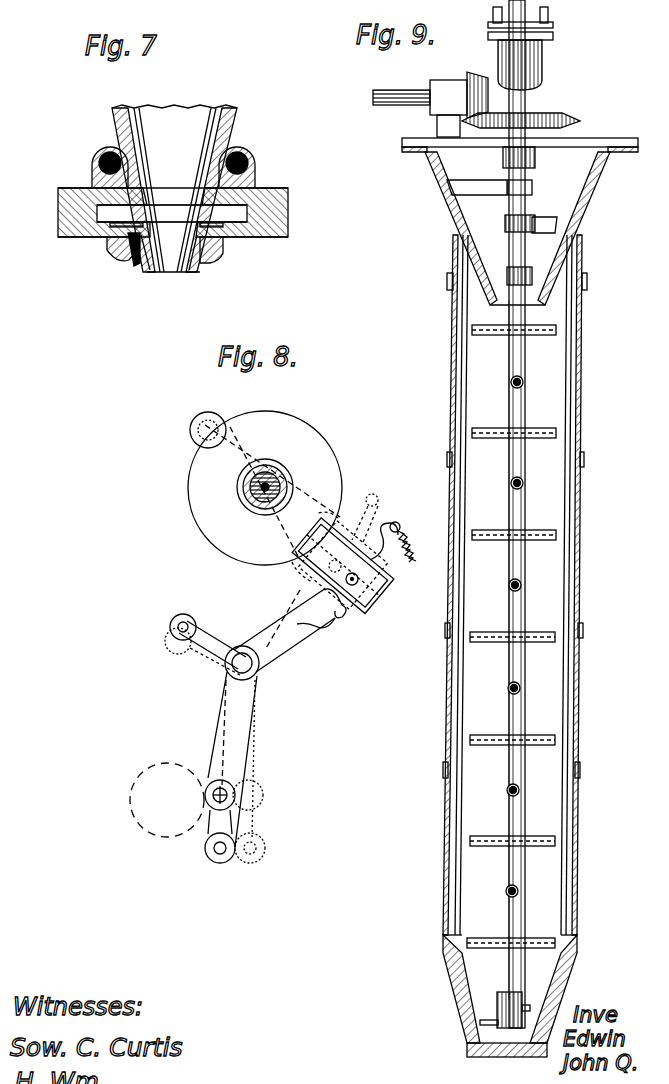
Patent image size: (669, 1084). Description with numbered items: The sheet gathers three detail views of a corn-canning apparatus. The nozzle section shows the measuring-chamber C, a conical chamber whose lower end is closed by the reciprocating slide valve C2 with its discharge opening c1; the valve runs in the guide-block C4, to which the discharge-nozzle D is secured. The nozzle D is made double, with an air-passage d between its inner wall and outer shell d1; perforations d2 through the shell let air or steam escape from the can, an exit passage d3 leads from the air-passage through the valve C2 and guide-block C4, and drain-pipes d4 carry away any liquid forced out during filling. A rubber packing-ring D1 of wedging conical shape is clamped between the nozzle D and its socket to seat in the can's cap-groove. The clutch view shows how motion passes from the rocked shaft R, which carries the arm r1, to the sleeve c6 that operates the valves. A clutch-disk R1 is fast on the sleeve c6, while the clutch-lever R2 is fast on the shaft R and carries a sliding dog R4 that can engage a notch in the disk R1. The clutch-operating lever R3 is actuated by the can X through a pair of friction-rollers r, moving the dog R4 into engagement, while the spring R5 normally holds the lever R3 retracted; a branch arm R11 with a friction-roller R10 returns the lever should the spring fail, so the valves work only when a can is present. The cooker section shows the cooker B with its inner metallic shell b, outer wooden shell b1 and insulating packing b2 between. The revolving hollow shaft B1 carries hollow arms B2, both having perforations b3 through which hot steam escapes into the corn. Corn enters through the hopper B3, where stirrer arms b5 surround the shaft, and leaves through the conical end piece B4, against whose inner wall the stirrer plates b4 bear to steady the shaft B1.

In FIG. 7, the measuring-chamber C is at (174, 188).
In FIG. 7, the lower valve C2 is at (108, 228).
In FIG. 7, the guide-block C4 is at (276, 190).
In FIG. 7, the valve opening c1 is at (174, 212).
In FIG. 8, the sleeve c6 is at (248, 497).
In FIG. 7, the discharge-nozzle D is at (174, 233).
In FIG. 7, the packing-ring D1 is at (221, 265).
In FIG. 7, the air-passage d is at (152, 268).
In FIG. 7, the outer shell d1 is at (143, 268).
In FIG. 7, the perforations d2 is at (127, 262).
In FIG. 7, the exit passage d3 is at (66, 207).
In FIG. 7, the drain-pipes d4 is at (95, 160).
In FIG. 8, the shaft R is at (280, 480).
In FIG. 8, the clutch-disk R1 is at (265, 488).
In FIG. 8, the clutch-lever R2 is at (341, 516).
In FIG. 8, the clutch-operating lever R3 is at (282, 645).
In FIG. 8, the dog R4 is at (372, 600).
In FIG. 8, the spring R5 is at (408, 540).
In FIG. 8, the friction-roller R10 is at (190, 602).
In FIG. 8, the branch arm R11 is at (205, 633).
In FIG. 8, the friction-rollers r is at (205, 795).
In FIG. 8, the arm r1 is at (195, 440).
In FIG. 8, the can X is at (168, 762).
In FIG. 9, the cooker B is at (509, 650).
In FIG. 9, the hollow shaft B1 is at (530, 95).
In FIG. 9, the hollow arms B2 is at (521, 585).
In FIG. 9, the hopper B3 is at (505, 188).
In FIG. 9, the end piece B4 is at (560, 972).
In FIG. 9, the inner metallic shell b is at (453, 406).
In FIG. 9, the outer wooden shell b1 is at (580, 493).
In FIG. 9, the insulating packing b2 is at (572, 557).
In FIG. 9, the perforations b3 is at (482, 643).
In FIG. 9, the stirrer plates b4 is at (518, 992).
In FIG. 9, the stirrer arms b5 is at (459, 183).